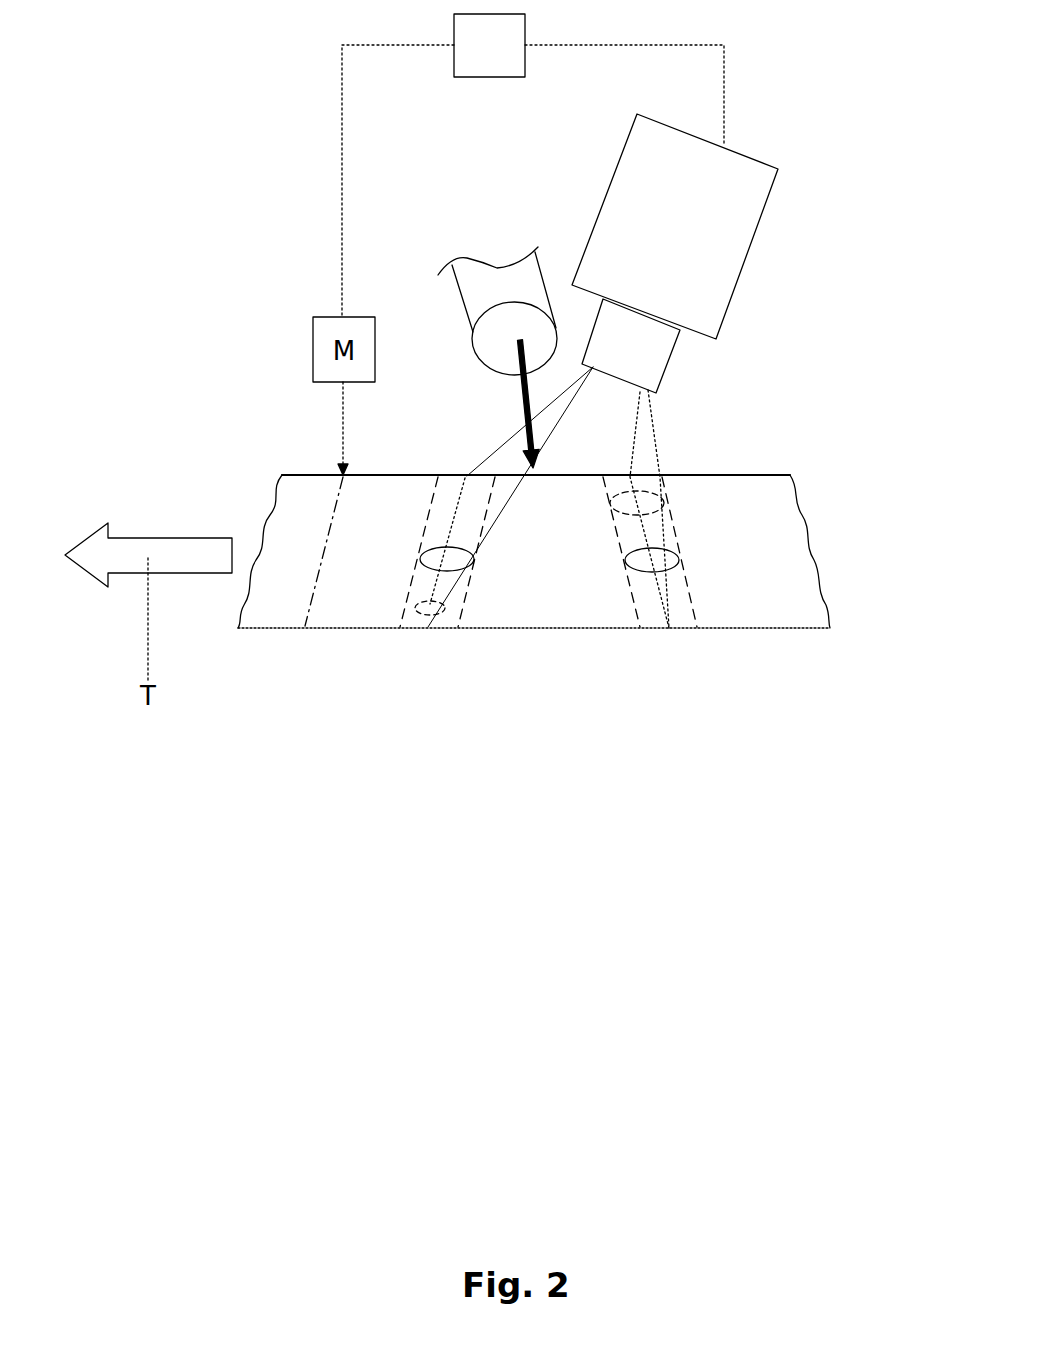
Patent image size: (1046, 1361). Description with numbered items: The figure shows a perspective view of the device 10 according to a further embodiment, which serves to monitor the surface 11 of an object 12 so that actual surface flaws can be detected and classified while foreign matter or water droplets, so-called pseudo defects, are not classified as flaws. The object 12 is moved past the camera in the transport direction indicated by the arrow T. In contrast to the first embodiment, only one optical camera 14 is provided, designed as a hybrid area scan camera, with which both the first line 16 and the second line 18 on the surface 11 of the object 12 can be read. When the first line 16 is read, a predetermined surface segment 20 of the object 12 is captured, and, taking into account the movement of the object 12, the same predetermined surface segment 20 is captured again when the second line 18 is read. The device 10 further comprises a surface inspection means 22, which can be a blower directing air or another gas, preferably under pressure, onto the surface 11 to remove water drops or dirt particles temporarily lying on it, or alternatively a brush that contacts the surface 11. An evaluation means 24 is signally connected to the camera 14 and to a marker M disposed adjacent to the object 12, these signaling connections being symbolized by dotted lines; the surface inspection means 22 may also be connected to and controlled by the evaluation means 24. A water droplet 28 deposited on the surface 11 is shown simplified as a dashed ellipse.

The device 10 is at (212, 226).
The surface 11 is at (723, 618).
The object 12 is at (547, 630).
The optical camera 14 is at (653, 162).
The first line 16 is at (688, 463).
The second line 18 is at (460, 488).
The predetermined surface segment 20 is at (413, 630).
The surface inspection means 22 is at (487, 285).
The evaluation means 24 is at (474, 60).
The water droplet 28 is at (448, 612).